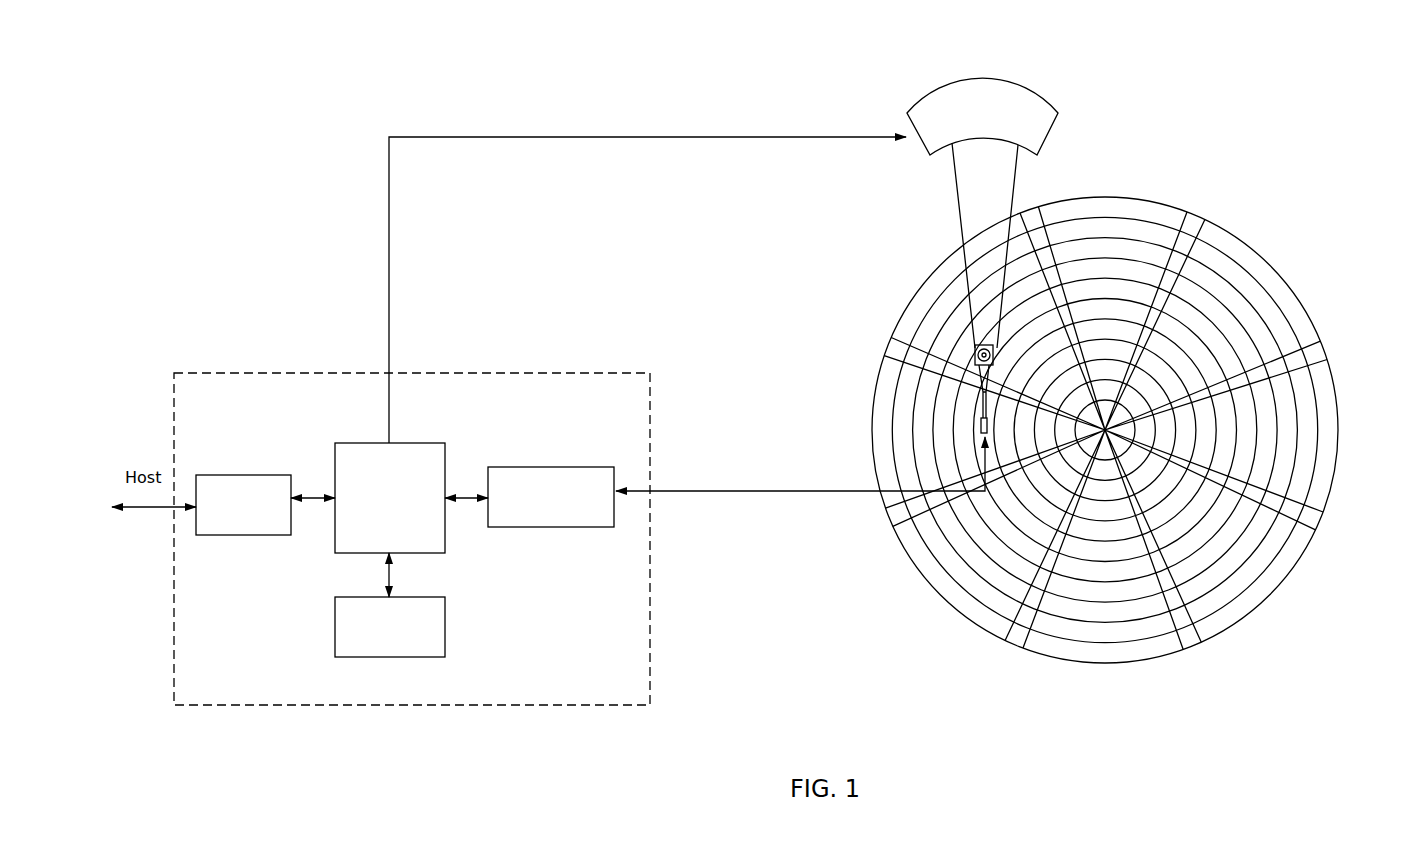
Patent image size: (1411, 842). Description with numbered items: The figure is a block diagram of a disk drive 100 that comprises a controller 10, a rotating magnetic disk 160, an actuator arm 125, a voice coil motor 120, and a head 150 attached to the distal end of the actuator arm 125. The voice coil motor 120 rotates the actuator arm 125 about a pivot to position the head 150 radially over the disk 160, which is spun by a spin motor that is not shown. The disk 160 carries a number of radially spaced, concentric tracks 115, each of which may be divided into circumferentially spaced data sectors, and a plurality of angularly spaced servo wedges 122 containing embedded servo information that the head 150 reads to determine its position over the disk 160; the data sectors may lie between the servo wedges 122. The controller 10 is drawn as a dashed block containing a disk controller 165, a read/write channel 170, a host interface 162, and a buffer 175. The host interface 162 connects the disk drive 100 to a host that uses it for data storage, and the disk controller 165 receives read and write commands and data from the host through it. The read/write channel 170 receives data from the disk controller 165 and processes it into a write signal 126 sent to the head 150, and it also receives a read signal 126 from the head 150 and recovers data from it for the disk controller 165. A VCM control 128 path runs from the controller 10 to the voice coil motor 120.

The disk drive 100 is at (1332, 72).
The controller 10 is at (540, 373).
The tracks 115 is at (1103, 228).
The voice coil motor 120 is at (923, 152).
The servo wedges 122 is at (1190, 673).
The actuator arm 125 is at (963, 233).
The write signal / read signal 126 is at (720, 493).
The VCM control 128 is at (388, 257).
The head 150 is at (979, 437).
The rotating magnetic disk 160 is at (1267, 251).
The host interface 162 is at (271, 475).
The disk controller 165 is at (431, 443).
The read/write channel 170 is at (547, 467).
The buffer 175 is at (445, 628).